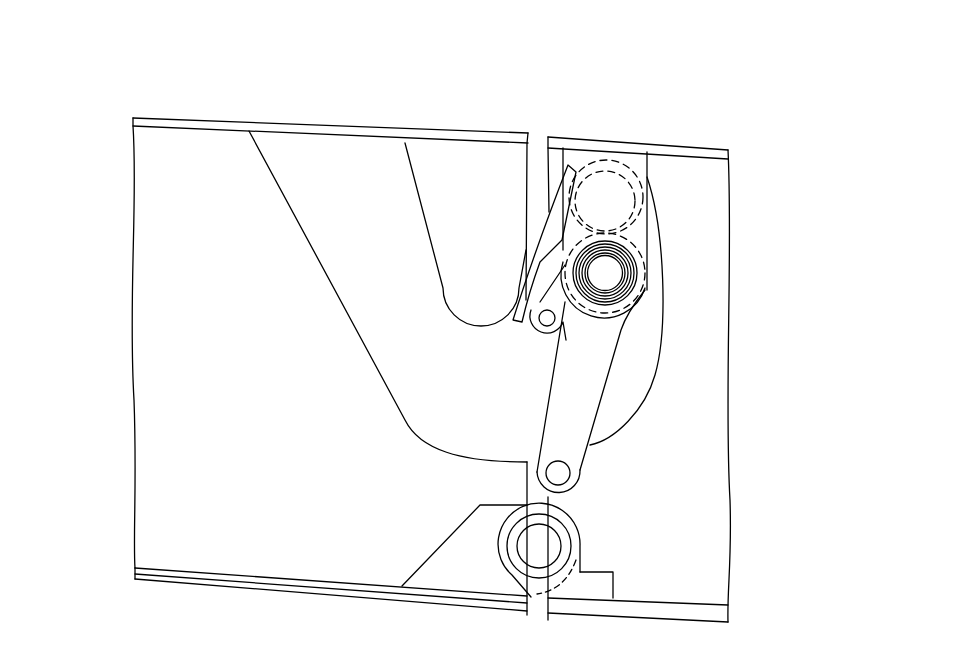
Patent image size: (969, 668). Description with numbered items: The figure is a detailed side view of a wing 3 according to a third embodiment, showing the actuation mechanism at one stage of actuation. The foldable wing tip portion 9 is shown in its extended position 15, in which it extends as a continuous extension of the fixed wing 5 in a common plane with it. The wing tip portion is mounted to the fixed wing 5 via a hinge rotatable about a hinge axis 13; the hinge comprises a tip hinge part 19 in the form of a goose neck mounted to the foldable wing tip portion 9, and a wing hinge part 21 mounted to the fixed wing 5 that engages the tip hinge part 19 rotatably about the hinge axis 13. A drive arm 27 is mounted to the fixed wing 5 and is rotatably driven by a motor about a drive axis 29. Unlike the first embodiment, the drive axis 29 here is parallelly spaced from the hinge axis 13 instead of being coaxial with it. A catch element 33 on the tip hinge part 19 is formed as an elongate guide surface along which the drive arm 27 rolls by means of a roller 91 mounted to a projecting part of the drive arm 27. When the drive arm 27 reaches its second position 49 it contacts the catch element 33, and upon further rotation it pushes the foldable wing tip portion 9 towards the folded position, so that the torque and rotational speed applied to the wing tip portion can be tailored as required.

The wing 3 is at (77, 142).
The extended position 15 is at (176, 97).
The foldable wing tip portion 9 is at (216, 323).
The tip hinge part 19 is at (370, 216).
The fixed wing 5 is at (703, 427).
The wing hinge part 21 is at (573, 160).
The hinge axis 13 is at (598, 198).
The catch element 33 is at (535, 273).
The drive axis 29 is at (607, 277).
The drive arm 27 is at (593, 394).
The roller 91 is at (528, 333).
The second position 49 is at (778, 284).